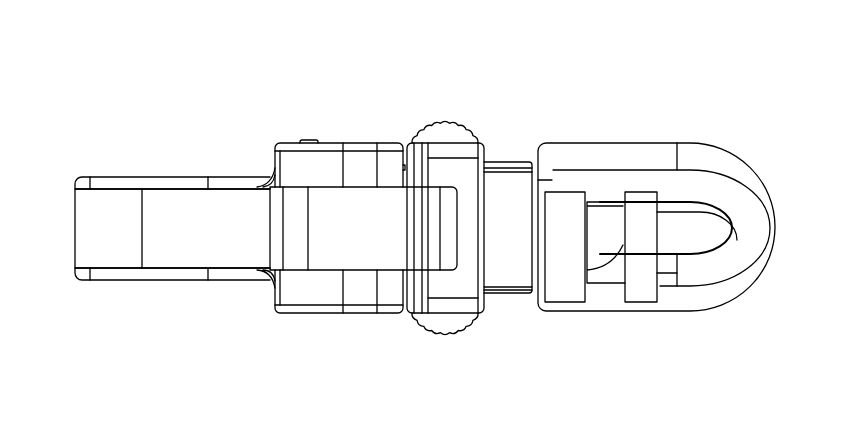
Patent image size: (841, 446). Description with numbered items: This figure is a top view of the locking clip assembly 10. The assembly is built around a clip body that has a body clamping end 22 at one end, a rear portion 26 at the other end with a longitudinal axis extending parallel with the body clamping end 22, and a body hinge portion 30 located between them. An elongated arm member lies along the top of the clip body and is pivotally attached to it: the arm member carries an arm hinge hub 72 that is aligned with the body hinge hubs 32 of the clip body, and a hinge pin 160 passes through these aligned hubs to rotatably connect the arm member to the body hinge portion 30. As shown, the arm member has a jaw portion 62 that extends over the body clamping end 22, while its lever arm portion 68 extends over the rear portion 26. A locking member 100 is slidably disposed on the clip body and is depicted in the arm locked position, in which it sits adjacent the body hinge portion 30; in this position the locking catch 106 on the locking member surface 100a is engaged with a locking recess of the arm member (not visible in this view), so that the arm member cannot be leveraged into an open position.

The locking clip assembly 10 is at (143, 95).
The body clamping end 22 is at (162, 178).
The rear portion 26 is at (518, 295).
The body hinge portion 30 is at (353, 145).
The body hinge hubs 32 is at (293, 167).
The jaw portion 62 is at (172, 228).
The lever arm portion 68 is at (363, 228).
The arm hinge hub 72 is at (288, 247).
The locking member 100 is at (487, 153).
The locking member surface 100a is at (453, 283).
The locking catch 106 is at (422, 162).
The hinge pin 160 is at (308, 141).